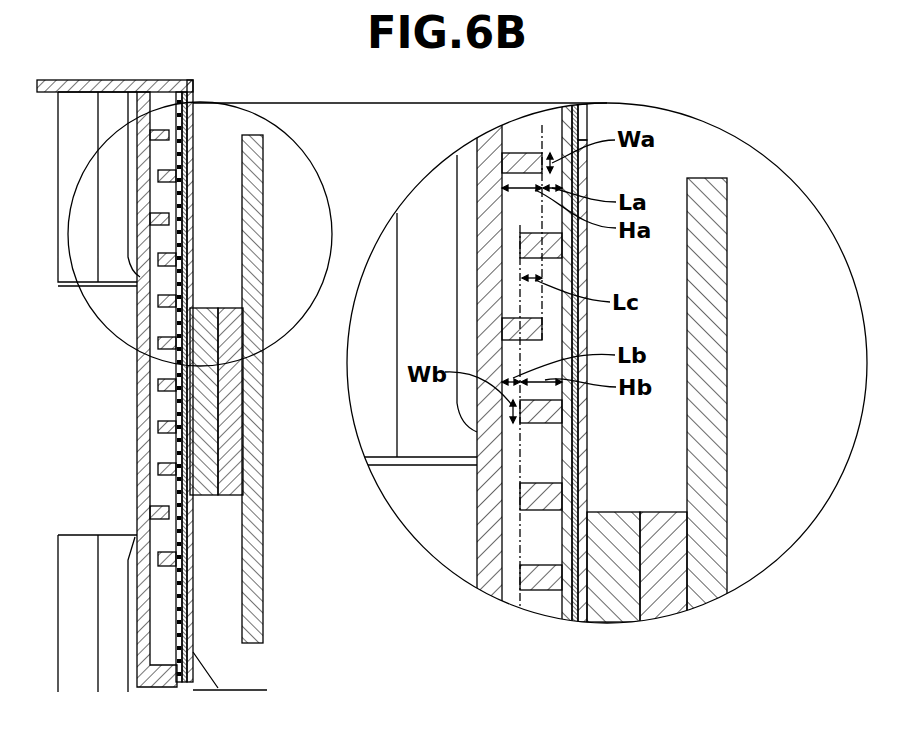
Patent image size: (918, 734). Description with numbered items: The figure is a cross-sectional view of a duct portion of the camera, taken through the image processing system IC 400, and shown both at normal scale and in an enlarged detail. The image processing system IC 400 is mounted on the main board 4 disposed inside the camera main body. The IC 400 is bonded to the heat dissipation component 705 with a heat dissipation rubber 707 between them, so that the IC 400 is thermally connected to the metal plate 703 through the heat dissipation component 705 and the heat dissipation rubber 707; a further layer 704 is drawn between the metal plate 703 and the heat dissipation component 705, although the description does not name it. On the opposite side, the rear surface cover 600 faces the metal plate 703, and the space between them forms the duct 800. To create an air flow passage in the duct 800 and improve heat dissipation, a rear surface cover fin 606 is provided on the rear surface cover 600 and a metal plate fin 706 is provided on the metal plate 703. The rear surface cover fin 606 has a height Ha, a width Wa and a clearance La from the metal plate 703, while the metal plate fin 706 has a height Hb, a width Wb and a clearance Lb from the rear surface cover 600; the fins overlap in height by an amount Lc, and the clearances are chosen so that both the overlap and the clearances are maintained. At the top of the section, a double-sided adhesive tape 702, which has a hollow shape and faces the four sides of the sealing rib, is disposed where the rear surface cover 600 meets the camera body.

The main board 4 is at (257, 233).
The image processing system IC 400 is at (230, 377).
The rear surface cover 600 is at (140, 422).
The rear surface cover fin 606 is at (152, 224).
The double-sided adhesive tape 702 is at (193, 92).
The metal plate 703 is at (177, 503).
The second layer 704 is at (193, 562).
The heat dissipation component 705 is at (193, 625).
The metal plate fin 706 is at (163, 467).
The heat dissipation rubber 707 is at (205, 457).
The duct 800 is at (140, 388).